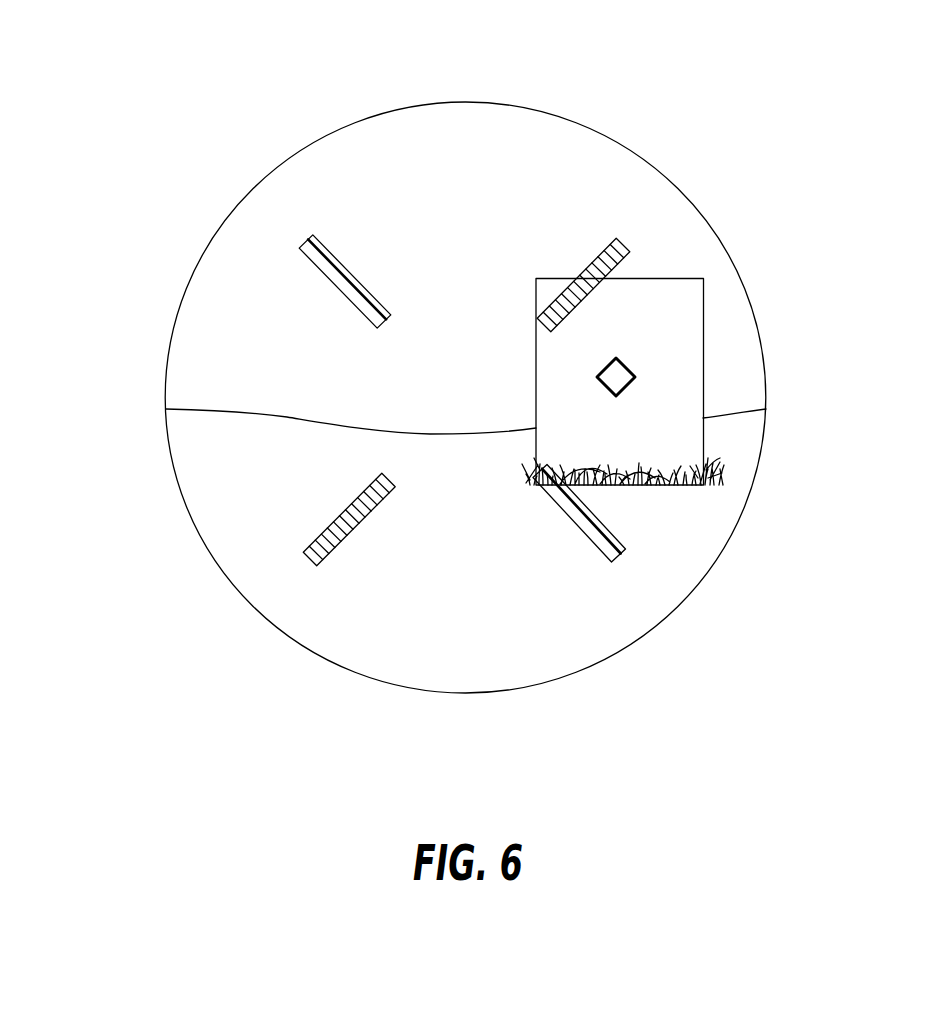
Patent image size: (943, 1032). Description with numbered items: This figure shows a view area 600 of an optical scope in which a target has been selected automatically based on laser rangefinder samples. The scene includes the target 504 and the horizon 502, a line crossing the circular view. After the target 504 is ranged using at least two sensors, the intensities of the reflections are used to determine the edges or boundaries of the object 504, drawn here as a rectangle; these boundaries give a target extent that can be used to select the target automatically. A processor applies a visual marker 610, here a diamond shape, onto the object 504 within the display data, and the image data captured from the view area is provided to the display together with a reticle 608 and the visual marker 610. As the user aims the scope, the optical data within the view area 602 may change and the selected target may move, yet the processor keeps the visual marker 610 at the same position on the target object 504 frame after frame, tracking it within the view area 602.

The view area 600 is at (104, 37).
The view area 602 is at (293, 153).
The horizon 502 is at (286, 416).
The target 504 is at (688, 279).
The reticle 608 is at (340, 259).
The visual marker 610 is at (616, 376).